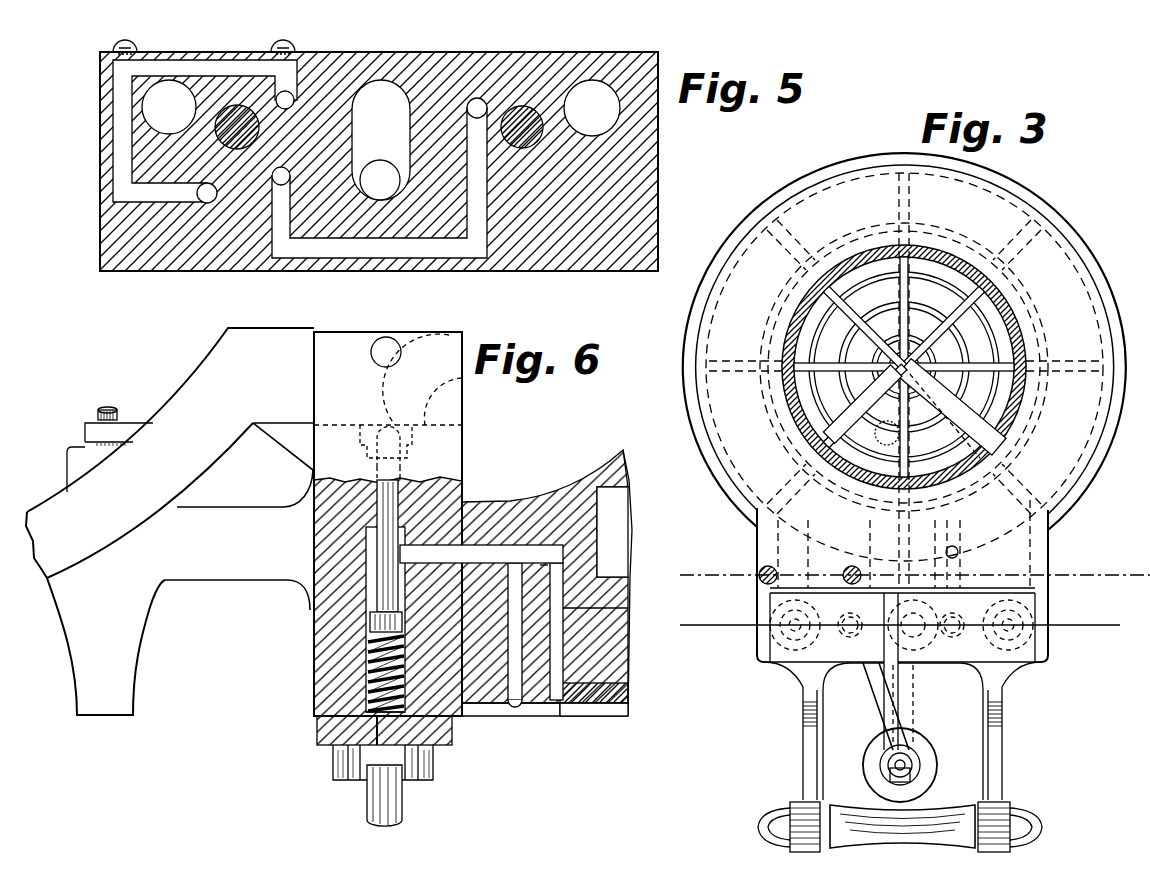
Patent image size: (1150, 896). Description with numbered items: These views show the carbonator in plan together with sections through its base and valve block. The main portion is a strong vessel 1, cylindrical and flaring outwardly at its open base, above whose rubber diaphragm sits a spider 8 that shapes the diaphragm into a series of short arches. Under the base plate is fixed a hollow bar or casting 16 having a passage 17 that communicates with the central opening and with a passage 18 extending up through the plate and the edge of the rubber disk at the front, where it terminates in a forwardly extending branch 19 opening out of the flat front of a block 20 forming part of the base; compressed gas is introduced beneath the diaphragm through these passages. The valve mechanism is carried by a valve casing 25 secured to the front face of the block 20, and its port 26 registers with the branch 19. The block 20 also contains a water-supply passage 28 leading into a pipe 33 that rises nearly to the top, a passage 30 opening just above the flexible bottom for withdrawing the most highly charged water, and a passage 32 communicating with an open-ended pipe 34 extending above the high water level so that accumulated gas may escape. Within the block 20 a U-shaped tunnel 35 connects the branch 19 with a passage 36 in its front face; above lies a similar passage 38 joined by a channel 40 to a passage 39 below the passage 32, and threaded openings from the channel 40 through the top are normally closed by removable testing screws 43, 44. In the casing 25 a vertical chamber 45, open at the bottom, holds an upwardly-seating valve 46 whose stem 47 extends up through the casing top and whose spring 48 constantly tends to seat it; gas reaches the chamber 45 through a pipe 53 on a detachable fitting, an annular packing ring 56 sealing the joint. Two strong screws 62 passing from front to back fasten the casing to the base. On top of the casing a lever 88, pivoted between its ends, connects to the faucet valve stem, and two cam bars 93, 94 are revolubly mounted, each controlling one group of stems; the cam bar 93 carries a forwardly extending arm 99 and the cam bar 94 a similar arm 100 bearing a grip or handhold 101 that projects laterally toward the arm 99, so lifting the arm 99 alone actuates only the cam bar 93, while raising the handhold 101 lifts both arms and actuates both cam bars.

In FIG. 3, the vessel 1 is at (960, 272).
In FIG. 3, the spider 8 is at (908, 290).
In FIG. 6, the hollow bar or casting 16 is at (578, 708).
In FIG. 6, the passage 17 is at (612, 700).
In FIG. 6, the opening or passage 18 is at (556, 648).
In FIG. 5, the forwardly extending branch 19 is at (477, 108).
In FIG. 6, the forwardly extending branch 19 is at (545, 572).
In FIG. 6, the block 20 is at (510, 508).
In FIG. 6, the valve casing 25 is at (318, 722).
In FIG. 6, the port or passage 26 is at (435, 545).
In FIG. 5, the passage 28 is at (592, 108).
In FIG. 5, the passage 30 is at (380, 180).
In FIG. 5, the passage 32 is at (162, 112).
In FIG. 3, the pipe 33 is at (1025, 540).
In FIG. 3, the open-ended pipe 34 is at (848, 440).
In FIG. 5, the U-shaped tunnel or channel 35 is at (440, 248).
In FIG. 6, the U-shaped tunnel or channel 35 is at (513, 665).
In FIG. 5, the passage 36 is at (281, 182).
In FIG. 5, the passage 38 is at (350, 80).
In FIG. 5, the passage 39 is at (204, 198).
In FIG. 5, the channel or tunnel 40 is at (170, 68).
In FIG. 5, the screw 43 is at (108, 52).
In FIG. 5, the screw 44 is at (288, 66).
In FIG. 6, the vertical chamber 45 is at (370, 620).
In FIG. 6, the upwardly-seating valve 46 is at (368, 660).
In FIG. 6, the stem 47 is at (310, 597).
In FIG. 6, the spring 48 is at (316, 690).
In FIG. 6, the pipe 53 is at (380, 790).
In FIG. 6, the annular packing ring 56 is at (335, 750).
In FIG. 5, the screws 62 is at (238, 110).
In FIG. 6, the lever 88 is at (125, 428).
In FIG. 3, the lever 88 is at (890, 710).
In FIG. 3, the cam bar 93 is at (962, 650).
In FIG. 3, the cam bar 94 is at (860, 650).
In FIG. 6, the arm 99 is at (62, 525).
In FIG. 3, the arm 99 is at (997, 765).
In FIG. 3, the arm 100 is at (803, 750).
In FIG. 3, the grip or handhold 101 is at (910, 822).